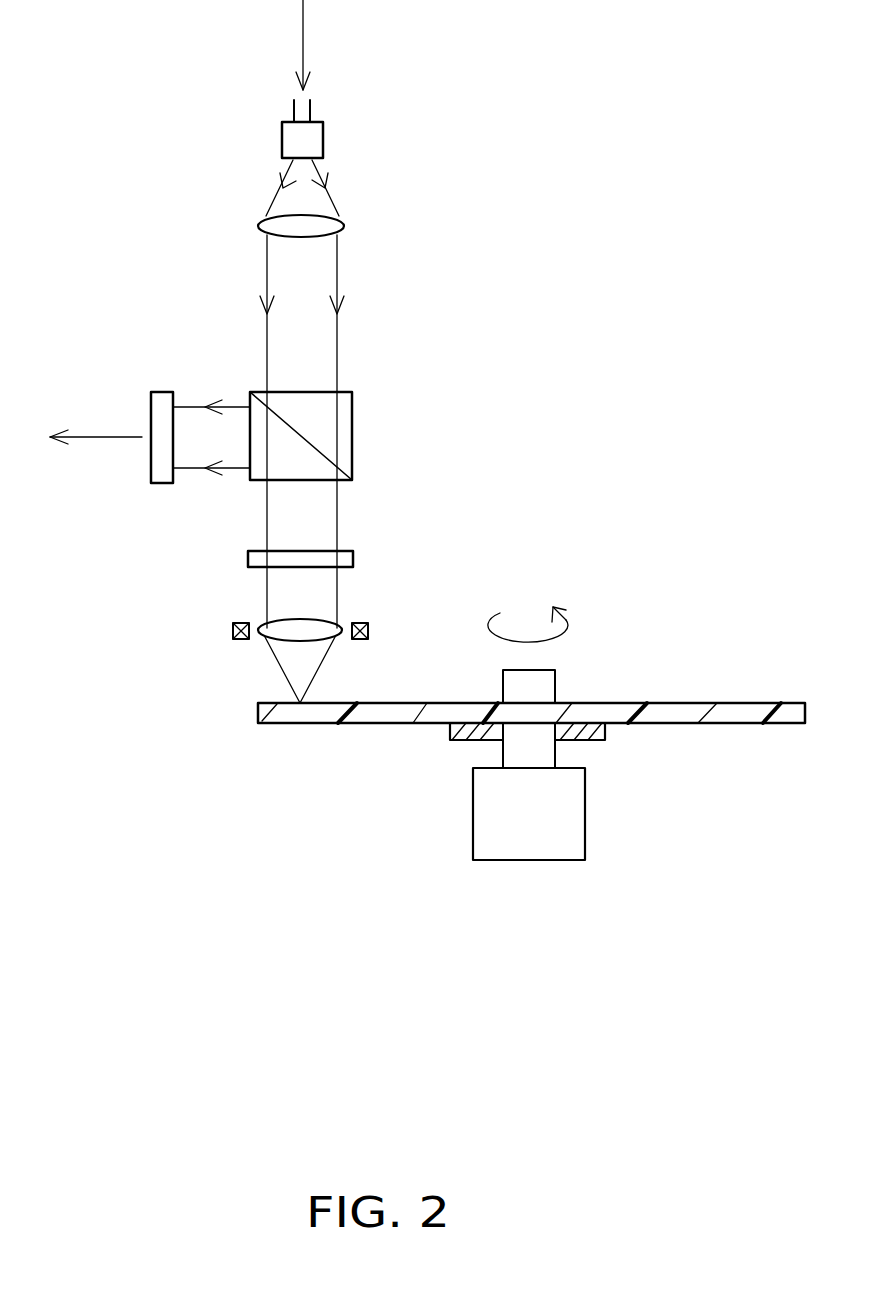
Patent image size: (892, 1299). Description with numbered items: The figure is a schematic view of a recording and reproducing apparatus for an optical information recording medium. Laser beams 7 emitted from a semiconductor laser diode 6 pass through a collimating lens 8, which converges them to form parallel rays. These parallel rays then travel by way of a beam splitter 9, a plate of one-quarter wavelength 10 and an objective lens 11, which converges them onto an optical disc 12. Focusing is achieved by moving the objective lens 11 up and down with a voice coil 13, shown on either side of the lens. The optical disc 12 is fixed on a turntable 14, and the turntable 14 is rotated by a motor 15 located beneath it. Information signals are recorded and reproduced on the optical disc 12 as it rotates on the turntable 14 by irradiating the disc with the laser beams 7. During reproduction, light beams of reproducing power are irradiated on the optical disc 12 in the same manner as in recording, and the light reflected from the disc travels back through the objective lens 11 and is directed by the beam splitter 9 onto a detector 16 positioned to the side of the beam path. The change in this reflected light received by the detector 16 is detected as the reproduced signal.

The semiconductor laser diode 6 is at (322, 122).
The laser beams 7 is at (338, 330).
The collimating lens 8 is at (344, 222).
The beam splitter 9 is at (353, 420).
The plate of 1/4 wavelength 10 is at (355, 560).
The objective lens 11 is at (263, 638).
The optical disc 12 is at (380, 725).
The voice coil 13 is at (232, 628).
The turntable 14 is at (595, 740).
The motor 15 is at (585, 858).
The detector 16 is at (158, 392).